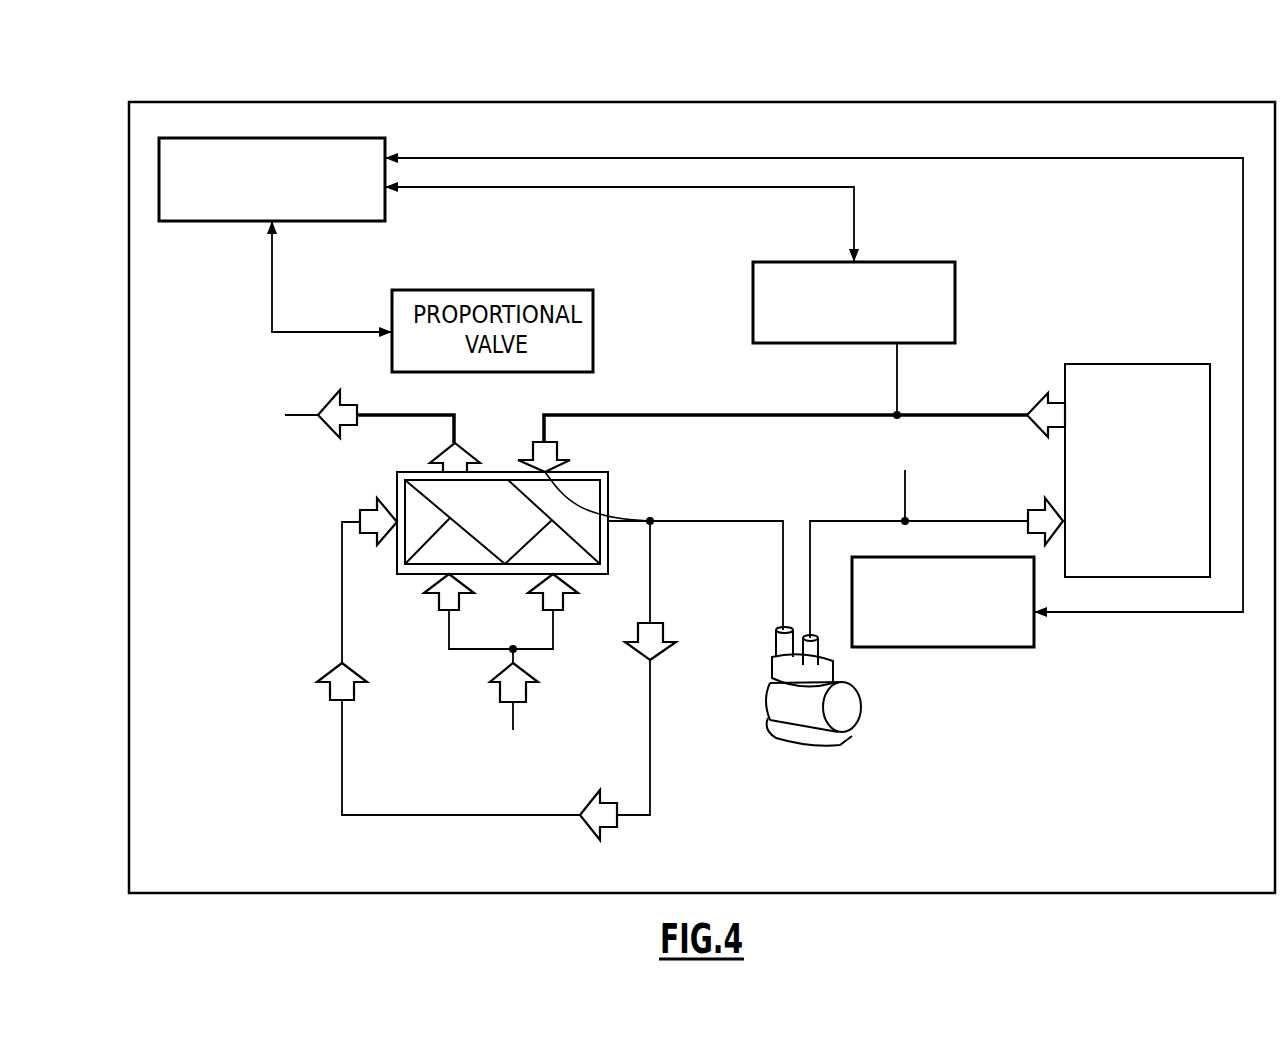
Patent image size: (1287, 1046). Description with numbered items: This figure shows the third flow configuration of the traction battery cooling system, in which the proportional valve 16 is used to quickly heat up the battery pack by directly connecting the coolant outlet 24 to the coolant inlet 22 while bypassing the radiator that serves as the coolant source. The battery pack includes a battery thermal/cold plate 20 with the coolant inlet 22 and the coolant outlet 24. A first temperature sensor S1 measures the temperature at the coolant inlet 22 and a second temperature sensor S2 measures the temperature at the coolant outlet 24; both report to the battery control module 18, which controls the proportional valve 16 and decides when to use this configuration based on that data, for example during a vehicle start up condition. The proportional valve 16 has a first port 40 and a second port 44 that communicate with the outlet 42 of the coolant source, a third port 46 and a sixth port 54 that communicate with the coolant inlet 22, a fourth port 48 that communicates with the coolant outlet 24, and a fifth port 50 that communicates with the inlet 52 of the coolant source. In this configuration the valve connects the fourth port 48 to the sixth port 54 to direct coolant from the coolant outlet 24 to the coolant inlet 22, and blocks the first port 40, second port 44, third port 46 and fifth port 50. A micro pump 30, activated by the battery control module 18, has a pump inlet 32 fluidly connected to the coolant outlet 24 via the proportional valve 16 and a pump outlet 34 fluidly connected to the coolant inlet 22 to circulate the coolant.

The proportional valve 16 is at (647, 378).
The battery control module 18 is at (217, 138).
The battery thermal/cold plate 20 is at (1138, 364).
The coolant inlet 22 is at (1024, 509).
The coolant outlet 24 is at (1062, 402).
The pump 30 is at (860, 716).
The pump inlet 32 is at (777, 645).
The pump outlet 34 is at (822, 645).
The first port 40 is at (560, 612).
The outlet of the coolant source 42 is at (515, 718).
The second port 44 is at (442, 612).
The third port 46 is at (390, 505).
The fourth port 48 is at (553, 471).
The fifth port 50 is at (440, 457).
The inlet of the coolant source 52 is at (327, 436).
The sixth port 54 is at (628, 520).
The first temperature sensor S1 is at (997, 637).
The second temperature sensor S2 is at (897, 262).